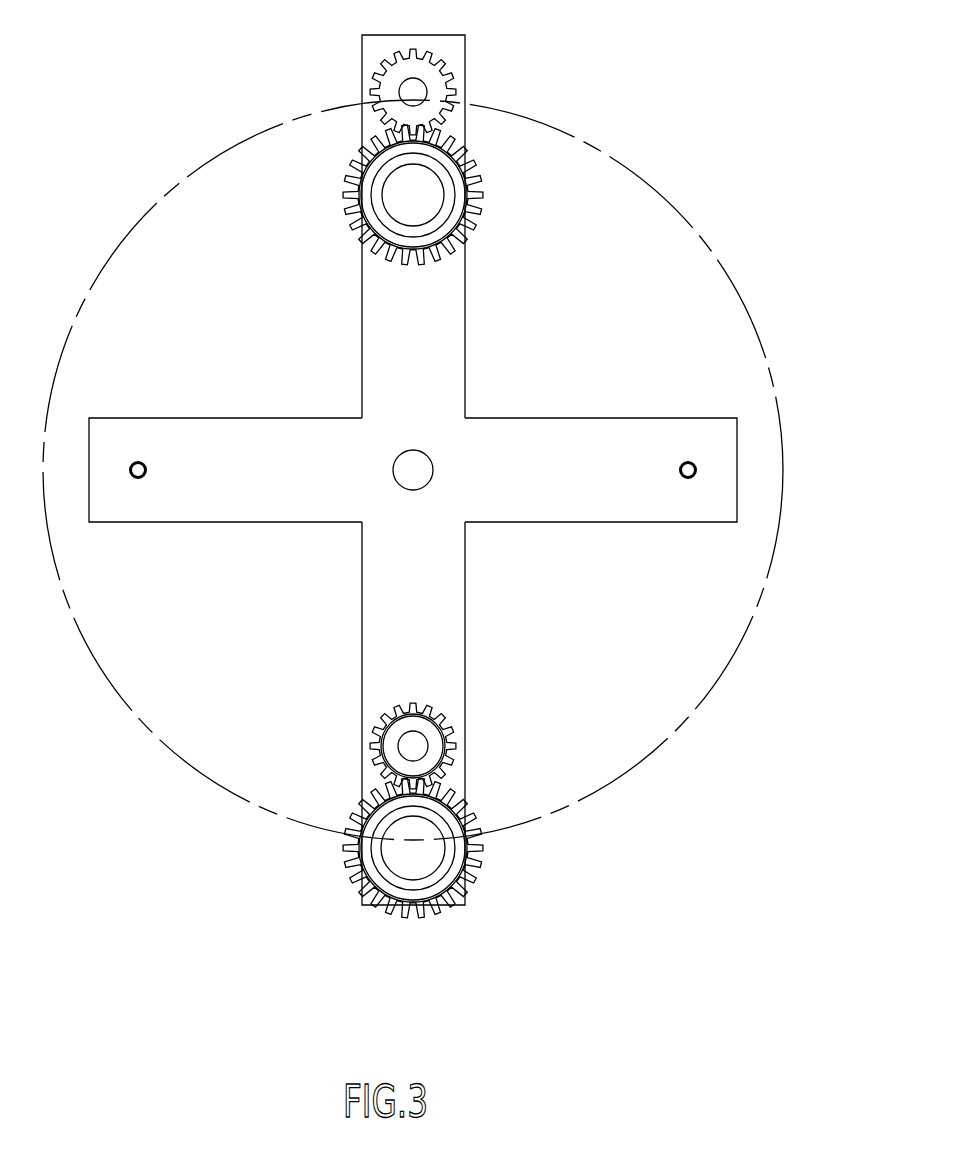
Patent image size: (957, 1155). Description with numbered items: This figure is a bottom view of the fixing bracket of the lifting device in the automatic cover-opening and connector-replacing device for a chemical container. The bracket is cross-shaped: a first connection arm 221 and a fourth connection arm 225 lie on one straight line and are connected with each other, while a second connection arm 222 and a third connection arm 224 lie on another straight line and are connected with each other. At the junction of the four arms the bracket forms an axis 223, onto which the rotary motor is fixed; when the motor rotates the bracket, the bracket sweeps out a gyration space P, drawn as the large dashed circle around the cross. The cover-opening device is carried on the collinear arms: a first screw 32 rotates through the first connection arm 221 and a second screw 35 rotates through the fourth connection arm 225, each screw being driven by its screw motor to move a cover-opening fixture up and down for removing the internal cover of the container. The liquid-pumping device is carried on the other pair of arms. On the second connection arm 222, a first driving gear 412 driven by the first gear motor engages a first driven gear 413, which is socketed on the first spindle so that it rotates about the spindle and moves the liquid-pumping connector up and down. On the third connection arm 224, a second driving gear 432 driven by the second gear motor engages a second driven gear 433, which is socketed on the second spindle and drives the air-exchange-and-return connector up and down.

The gyration space P is at (133, 223).
The first connection arm 221 is at (590, 450).
The second connection arm 222 is at (438, 618).
The axis 223 is at (393, 470).
The third connection arm 224 is at (388, 283).
The fourth connection arm 225 is at (220, 447).
The first screw 32 is at (697, 469).
The second screw 35 is at (139, 462).
The first driving gear 412 is at (382, 867).
The first driven gear 413 is at (433, 752).
The second driving gear 432 is at (435, 83).
The second driven gear 433 is at (423, 202).